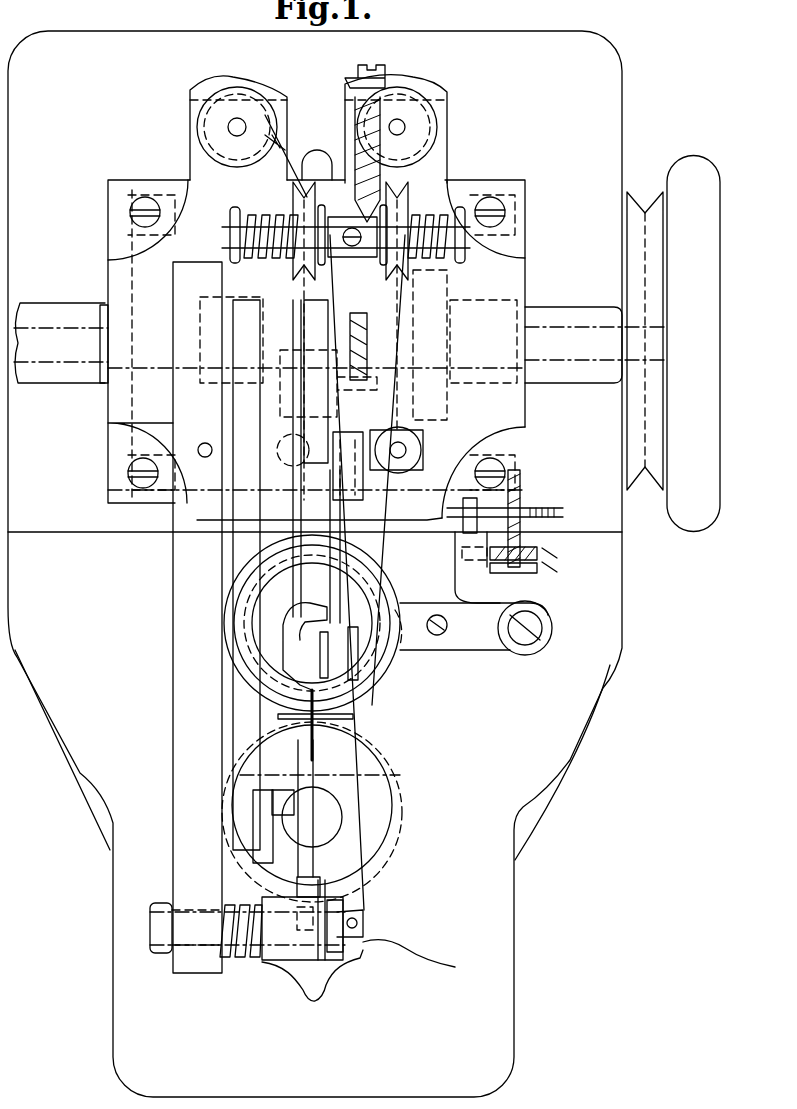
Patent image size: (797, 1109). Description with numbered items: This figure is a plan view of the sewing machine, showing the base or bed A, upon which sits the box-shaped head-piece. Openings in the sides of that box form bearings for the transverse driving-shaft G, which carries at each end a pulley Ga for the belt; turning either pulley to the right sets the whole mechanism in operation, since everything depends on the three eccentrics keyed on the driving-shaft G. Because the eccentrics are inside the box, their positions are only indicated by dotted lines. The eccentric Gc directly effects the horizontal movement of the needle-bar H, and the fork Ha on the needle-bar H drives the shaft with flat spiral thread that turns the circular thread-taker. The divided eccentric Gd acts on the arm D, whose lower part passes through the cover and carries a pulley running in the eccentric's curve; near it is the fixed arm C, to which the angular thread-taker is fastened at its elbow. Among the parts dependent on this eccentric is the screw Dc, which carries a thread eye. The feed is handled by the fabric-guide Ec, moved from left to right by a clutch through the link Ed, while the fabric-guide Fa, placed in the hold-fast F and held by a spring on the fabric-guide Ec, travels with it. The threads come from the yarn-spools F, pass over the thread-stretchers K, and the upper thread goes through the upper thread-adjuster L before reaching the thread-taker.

The base or bed A is at (315, 564).
The fixed arm C is at (197, 617).
The arm D is at (253, 581).
The yarn-spool / hold-fast F is at (358, 940).
The fabric-guide (spring) Fa is at (312, 796).
The transverse driving-shaft G is at (340, 343).
The pulley Ga is at (673, 344).
The eccentric Gc is at (348, 466).
The eccentric Gd is at (346, 240).
The needle-bar H is at (316, 430).
The fork Ha is at (305, 458).
The upper thread-adjuster L is at (396, 450).
The fabric-guide Ec is at (423, 580).
The link Ed is at (473, 628).
The screw Dc is at (296, 818).
The thread-stretcher K is at (254, 926).